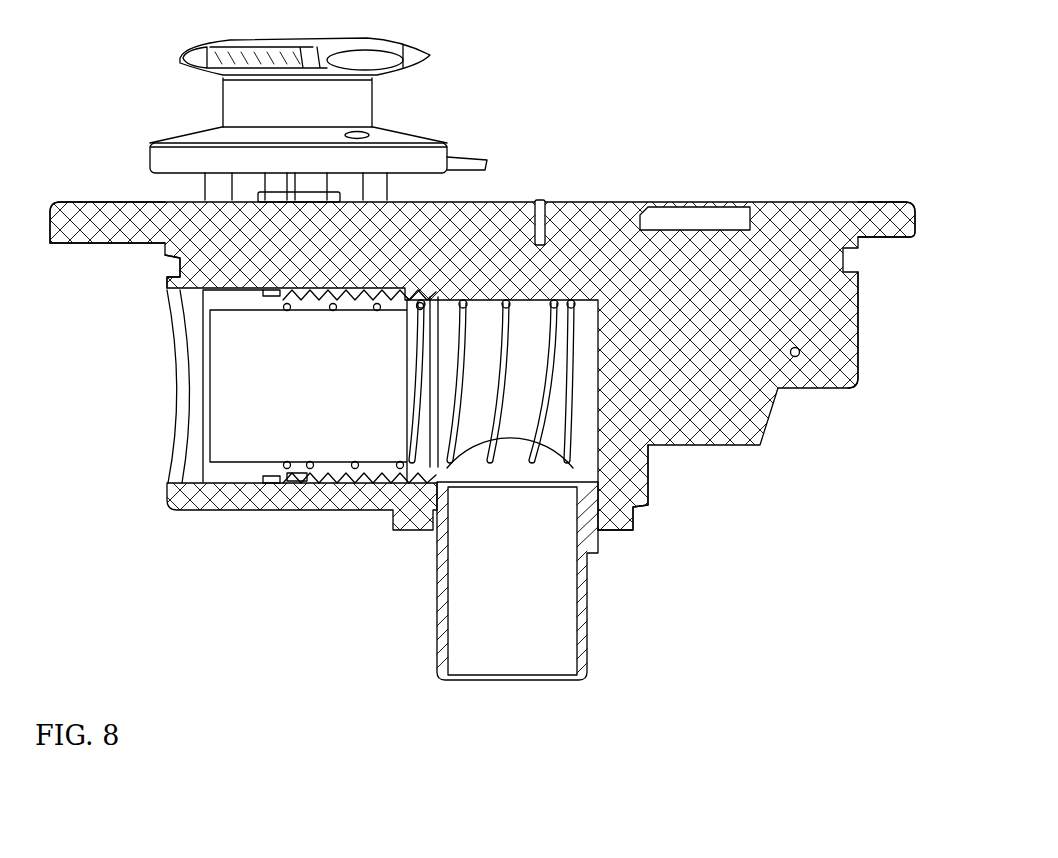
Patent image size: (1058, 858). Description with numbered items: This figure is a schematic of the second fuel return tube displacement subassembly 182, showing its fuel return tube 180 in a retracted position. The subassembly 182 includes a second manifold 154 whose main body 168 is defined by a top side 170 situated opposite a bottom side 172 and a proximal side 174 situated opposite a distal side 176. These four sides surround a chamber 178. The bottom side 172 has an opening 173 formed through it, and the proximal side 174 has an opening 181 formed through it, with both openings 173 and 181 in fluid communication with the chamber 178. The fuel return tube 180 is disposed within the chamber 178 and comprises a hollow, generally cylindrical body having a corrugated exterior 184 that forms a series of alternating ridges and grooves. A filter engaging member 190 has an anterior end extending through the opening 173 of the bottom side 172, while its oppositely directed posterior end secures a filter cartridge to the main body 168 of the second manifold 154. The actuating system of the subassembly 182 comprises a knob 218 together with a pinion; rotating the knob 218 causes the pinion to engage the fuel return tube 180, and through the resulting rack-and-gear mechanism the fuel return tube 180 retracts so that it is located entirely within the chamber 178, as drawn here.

The second manifold 154 is at (826, 460).
The main body 168 is at (764, 252).
The top side 170 is at (878, 201).
The bottom side 172 is at (633, 533).
The opening 173 is at (433, 532).
The proximal side 174 is at (50, 233).
The distal side 176 is at (858, 343).
The chamber 178 is at (192, 463).
The fuel return tube 180 is at (252, 468).
The opening 181 is at (162, 310).
The second fuel return tube displacement subassembly 182 is at (729, 88).
The corrugated exterior 184 is at (350, 476).
The filter engaging member 190 is at (603, 652).
The knob 218 is at (447, 46).